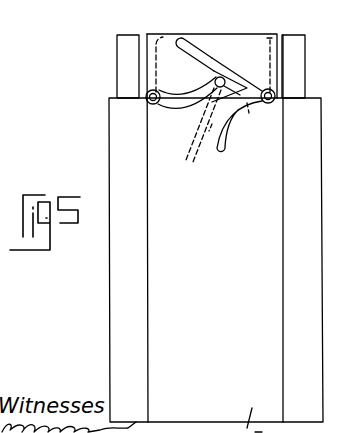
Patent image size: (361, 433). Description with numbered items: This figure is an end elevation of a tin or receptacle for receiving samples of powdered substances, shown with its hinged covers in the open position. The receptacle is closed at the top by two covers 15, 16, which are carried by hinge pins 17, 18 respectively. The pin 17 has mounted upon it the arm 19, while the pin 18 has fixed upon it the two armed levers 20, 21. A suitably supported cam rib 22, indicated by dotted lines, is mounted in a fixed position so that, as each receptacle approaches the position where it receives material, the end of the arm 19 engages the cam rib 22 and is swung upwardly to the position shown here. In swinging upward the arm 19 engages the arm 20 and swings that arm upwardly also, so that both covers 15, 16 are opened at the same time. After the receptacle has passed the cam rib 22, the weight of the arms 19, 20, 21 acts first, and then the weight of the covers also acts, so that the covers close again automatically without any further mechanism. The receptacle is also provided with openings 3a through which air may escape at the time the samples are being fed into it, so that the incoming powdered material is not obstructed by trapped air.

The openings 3a is at (126, 37).
The cover 15 is at (152, 66).
The cover 16 is at (272, 60).
The hinge pin 17 is at (147, 102).
The hinge pin 18 is at (277, 103).
The arm 19 is at (177, 103).
The two armed lever 20 is at (235, 70).
The two armed lever 21 is at (236, 112).
The cam rib 22 is at (224, 93).